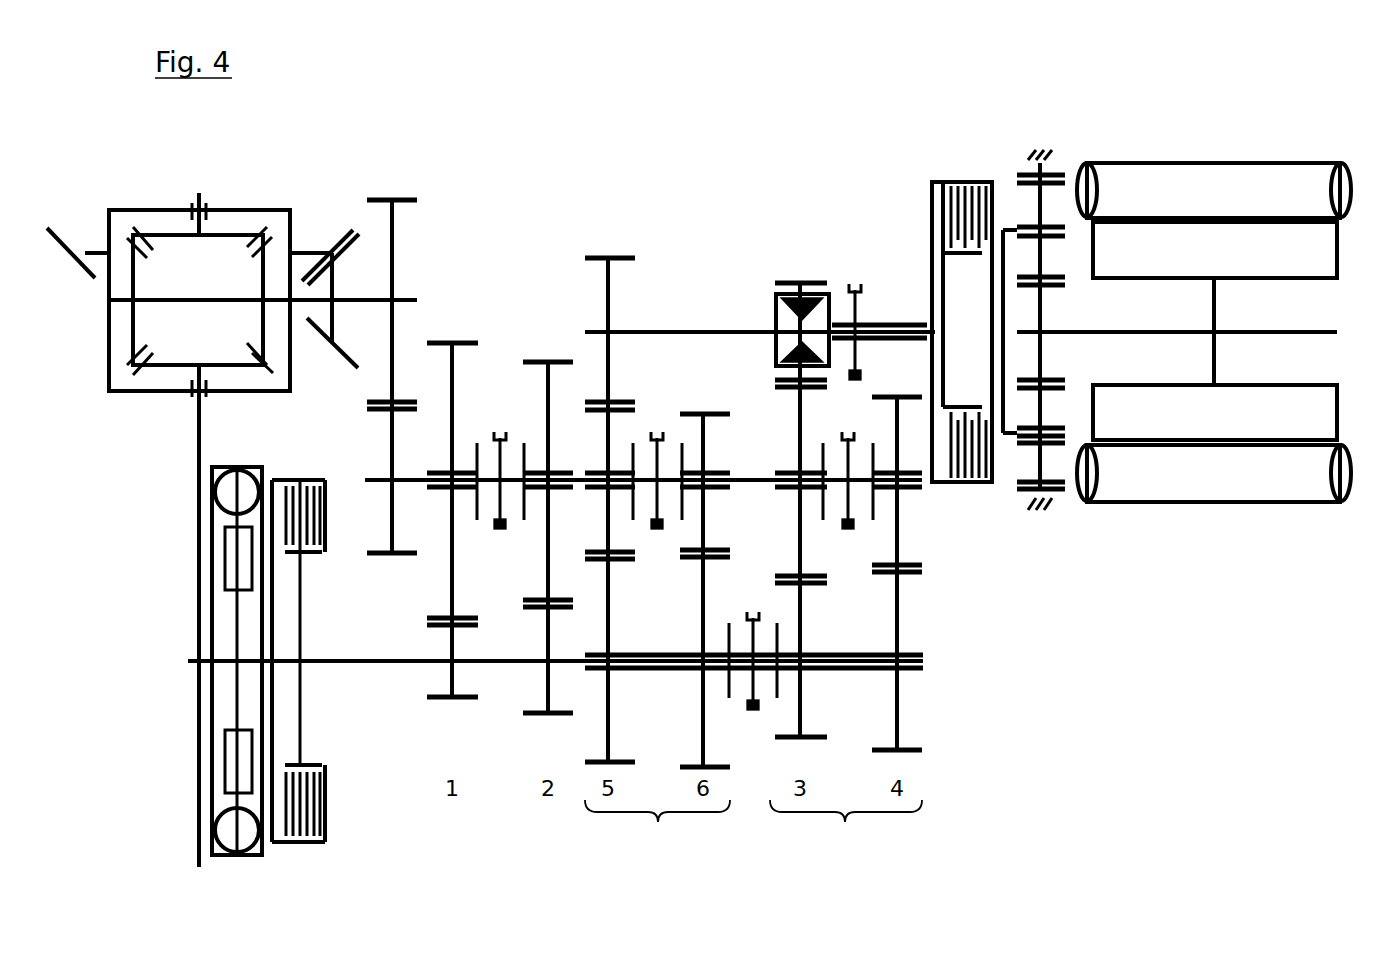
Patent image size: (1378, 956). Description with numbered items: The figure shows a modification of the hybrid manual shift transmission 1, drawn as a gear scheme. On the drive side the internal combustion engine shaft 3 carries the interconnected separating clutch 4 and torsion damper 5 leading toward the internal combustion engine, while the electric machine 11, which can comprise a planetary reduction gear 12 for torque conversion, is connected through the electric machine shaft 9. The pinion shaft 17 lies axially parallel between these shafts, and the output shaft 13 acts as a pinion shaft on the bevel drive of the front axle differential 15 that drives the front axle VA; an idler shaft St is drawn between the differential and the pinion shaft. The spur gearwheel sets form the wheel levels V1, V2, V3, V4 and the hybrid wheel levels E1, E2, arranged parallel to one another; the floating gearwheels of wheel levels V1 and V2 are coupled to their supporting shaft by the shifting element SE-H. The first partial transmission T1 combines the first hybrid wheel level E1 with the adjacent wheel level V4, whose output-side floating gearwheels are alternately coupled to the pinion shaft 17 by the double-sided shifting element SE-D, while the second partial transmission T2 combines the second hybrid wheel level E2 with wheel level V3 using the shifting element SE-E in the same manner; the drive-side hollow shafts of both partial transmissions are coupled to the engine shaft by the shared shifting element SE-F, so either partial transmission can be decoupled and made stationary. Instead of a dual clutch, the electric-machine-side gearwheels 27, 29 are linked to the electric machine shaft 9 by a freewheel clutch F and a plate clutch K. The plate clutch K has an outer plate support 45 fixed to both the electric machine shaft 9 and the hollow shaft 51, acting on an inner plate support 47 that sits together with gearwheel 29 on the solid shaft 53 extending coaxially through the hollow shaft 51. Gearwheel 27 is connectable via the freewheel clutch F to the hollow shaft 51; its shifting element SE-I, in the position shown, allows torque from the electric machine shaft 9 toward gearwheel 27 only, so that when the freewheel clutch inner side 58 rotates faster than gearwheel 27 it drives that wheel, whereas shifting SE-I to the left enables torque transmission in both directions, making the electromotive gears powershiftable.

The manual shift transmission 1 is at (593, 180).
The internal combustion engine shaft 3 is at (378, 660).
The separating clutch 4 is at (305, 843).
The torsion damper 5 is at (233, 857).
The electric machine shaft 9 is at (998, 442).
The electric machine 11 is at (1296, 163).
The planetary reduction gear 12 is at (1022, 175).
The output shaft 13 is at (398, 298).
The front axle differential 15 is at (253, 207).
The pinion shaft 17 is at (378, 478).
The electric-machine-side gearwheel 27 is at (820, 283).
The electric-machine-side gearwheel 29 is at (590, 258).
The outer plate support 45 is at (950, 253).
The inner plate support 47 is at (945, 298).
The hollow shaft 51 is at (900, 325).
The solid shaft 53 is at (680, 330).
The freewheel clutch inner side 58 is at (772, 313).
The plate clutch K is at (1094, 248).
The freewheel clutch F is at (757, 315).
The idler shaft St is at (392, 356).
The front axle VA is at (200, 455).
The first hybrid wheel level E1 is at (798, 241).
The second hybrid wheel level E2 is at (606, 239).
The wheel level V1 is at (452, 502).
The wheel level V2 is at (548, 519).
The wheel level V3 is at (705, 572).
The wheel level V4 is at (897, 556).
The shifting element SE-H is at (498, 458).
The shifting element SE-E is at (658, 529).
The shifting element SE-D is at (857, 525).
The shifting element SE-F is at (763, 708).
The shifting element SE-I is at (856, 285).
The first partial transmission T1 is at (846, 831).
The second partial transmission T2 is at (657, 831).